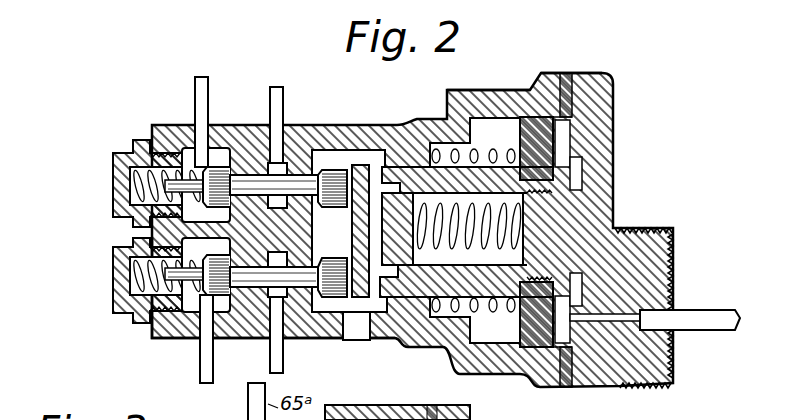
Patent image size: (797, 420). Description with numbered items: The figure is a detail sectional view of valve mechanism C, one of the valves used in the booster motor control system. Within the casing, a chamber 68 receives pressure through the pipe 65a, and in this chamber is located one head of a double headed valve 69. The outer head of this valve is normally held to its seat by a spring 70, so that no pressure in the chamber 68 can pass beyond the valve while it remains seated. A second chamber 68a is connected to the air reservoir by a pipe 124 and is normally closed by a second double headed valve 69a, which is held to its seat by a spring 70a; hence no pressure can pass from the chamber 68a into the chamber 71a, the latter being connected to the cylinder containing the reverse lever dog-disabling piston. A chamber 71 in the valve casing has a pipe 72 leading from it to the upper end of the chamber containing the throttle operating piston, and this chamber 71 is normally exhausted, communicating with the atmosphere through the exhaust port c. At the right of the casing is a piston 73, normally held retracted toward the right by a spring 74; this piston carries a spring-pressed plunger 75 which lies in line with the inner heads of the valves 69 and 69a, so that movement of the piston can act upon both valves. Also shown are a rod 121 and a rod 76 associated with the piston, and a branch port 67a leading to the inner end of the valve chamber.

The chamber 68 is at (158, 125).
The chamber 68a is at (150, 331).
The spring 70 is at (130, 172).
The spring 70a is at (128, 267).
The double headed valve 69 is at (218, 178).
The double headed valve 69a is at (206, 290).
The pipe 65a is at (196, 91).
The pipe 124 is at (200, 374).
The pipe 72 is at (284, 97).
The rod 121 is at (272, 352).
The chamber 71 is at (281, 167).
The chamber 71a is at (306, 341).
The spring-pressed plunger 75 is at (382, 213).
The spring 74 is at (501, 90).
The piston 73 is at (541, 152).
The piston rod 76 is at (708, 317).
The exhaust port c is at (549, 75).
The branch port 67a is at (355, 419).